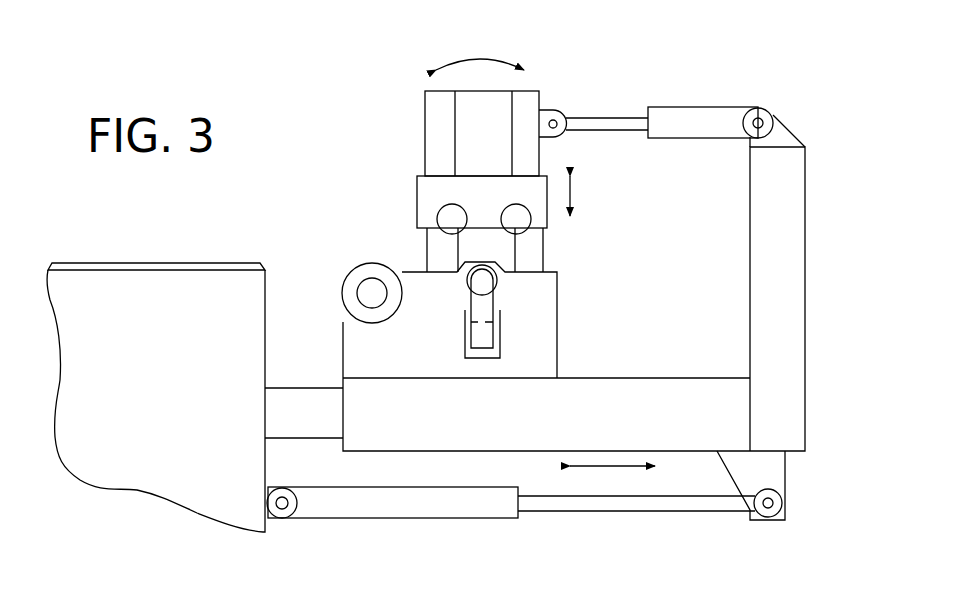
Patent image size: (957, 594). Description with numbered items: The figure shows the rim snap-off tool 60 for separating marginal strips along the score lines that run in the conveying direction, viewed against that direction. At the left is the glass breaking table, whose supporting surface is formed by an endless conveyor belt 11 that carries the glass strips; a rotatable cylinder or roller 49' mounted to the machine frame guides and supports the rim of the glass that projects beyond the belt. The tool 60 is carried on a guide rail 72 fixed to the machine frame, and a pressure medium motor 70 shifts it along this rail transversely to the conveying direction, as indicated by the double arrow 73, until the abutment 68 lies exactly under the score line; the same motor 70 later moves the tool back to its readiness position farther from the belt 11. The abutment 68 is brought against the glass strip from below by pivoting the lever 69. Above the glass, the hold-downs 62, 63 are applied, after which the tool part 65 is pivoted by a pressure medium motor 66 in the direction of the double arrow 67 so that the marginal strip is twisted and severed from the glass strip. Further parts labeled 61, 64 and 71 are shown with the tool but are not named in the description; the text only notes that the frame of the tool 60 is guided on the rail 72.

The conveyor belt 11 is at (178, 262).
The rotatable cylinder or roller 49' is at (355, 279).
The rim snap-off tool 60 is at (576, 98).
The clamp block 61 is at (425, 184).
The hold-down 62 is at (445, 220).
The hold-down 63 is at (518, 223).
The vertical movement arrow 64 is at (575, 203).
The tool part 65 is at (467, 122).
The pressure medium motor 66 is at (680, 113).
The double arrow 67 is at (478, 57).
The abutment 68 is at (498, 282).
The lever 69 is at (488, 303).
The pressure medium motor 70 is at (445, 512).
The carriage frame 71 is at (733, 418).
The guide rail 72 is at (296, 400).
The double arrow 73 is at (610, 467).